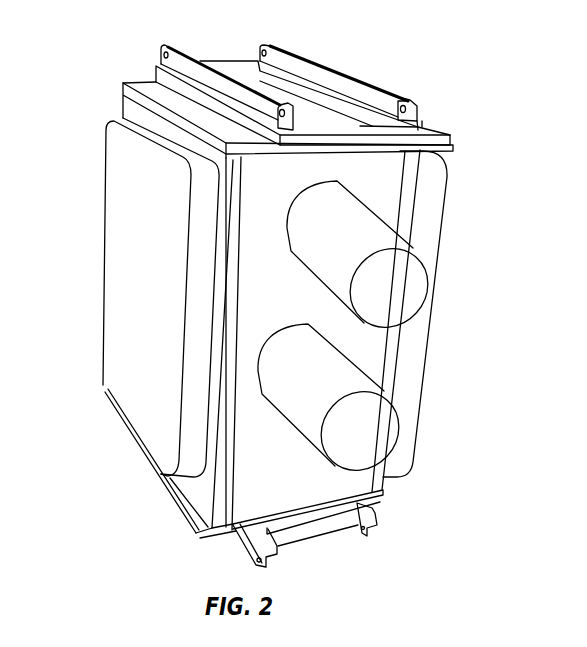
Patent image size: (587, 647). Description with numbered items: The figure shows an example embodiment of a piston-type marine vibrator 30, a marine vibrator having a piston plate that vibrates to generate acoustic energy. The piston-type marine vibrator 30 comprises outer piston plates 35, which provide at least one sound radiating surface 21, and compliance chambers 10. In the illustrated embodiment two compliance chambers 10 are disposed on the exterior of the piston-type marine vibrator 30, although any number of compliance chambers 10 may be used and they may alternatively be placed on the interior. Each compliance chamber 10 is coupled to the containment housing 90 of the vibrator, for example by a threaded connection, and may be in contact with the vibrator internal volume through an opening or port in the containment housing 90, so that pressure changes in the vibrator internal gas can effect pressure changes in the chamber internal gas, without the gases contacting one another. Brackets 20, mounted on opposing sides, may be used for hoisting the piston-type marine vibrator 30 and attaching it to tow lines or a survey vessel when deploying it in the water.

The compliance chamber 10 is at (365, 229).
The bracket 20 is at (285, 55).
The sound radiating surface 21 is at (117, 244).
The piston-type marine vibrator 30 is at (440, 80).
The outer piston plate 35 is at (112, 153).
The containment housing 90 is at (245, 505).